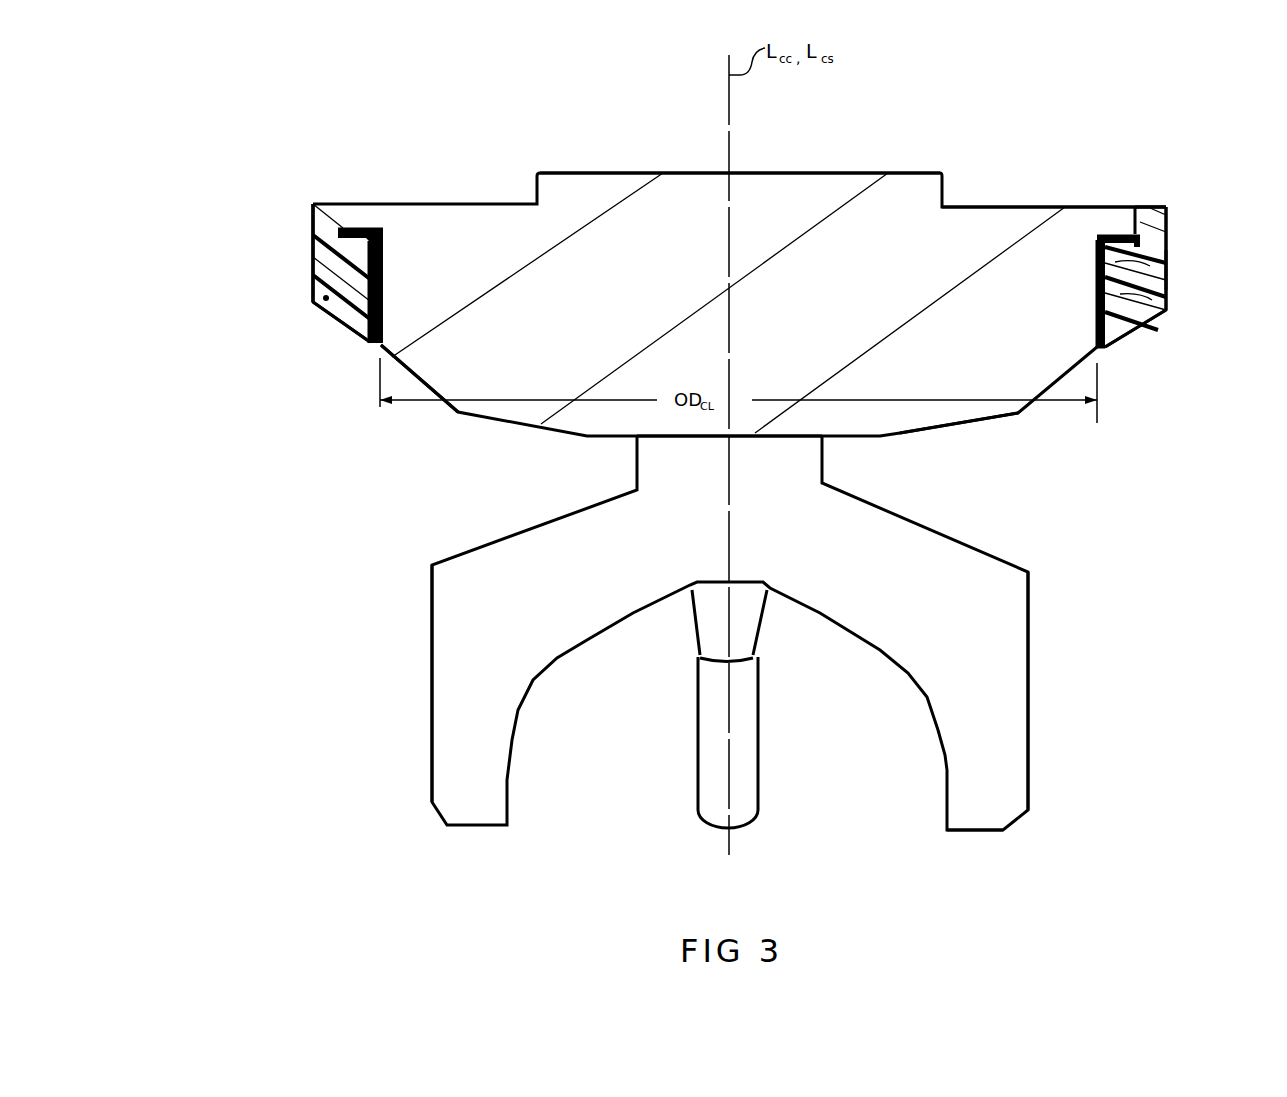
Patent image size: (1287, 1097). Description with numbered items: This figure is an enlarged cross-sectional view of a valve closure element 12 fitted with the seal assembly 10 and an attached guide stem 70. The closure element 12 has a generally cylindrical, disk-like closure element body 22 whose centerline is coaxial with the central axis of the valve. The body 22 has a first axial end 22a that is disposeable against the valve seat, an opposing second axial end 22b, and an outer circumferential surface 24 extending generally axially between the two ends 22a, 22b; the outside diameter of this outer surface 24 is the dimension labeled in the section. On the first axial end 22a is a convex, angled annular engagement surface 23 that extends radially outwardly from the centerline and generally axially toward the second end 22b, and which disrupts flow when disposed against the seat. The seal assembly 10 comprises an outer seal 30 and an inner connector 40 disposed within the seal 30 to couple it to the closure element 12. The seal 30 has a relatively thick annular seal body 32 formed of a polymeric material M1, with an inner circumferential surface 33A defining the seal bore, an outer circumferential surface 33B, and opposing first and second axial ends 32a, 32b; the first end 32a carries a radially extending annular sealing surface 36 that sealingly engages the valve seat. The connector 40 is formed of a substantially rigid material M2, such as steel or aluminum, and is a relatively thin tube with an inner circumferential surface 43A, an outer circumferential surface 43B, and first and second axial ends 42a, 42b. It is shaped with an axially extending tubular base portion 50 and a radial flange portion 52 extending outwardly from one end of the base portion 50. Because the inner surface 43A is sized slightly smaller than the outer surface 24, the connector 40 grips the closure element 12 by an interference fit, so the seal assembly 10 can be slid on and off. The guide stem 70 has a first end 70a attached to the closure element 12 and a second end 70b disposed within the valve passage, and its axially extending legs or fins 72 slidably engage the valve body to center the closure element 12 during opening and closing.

The seal assembly 10 is at (237, 283).
The closure element 12 is at (466, 138).
The closure element body 22 is at (986, 198).
The first axial end 22a is at (1000, 417).
The second axial end 22b is at (1035, 207).
The engagement surface 23 is at (443, 402).
The outer circumferential surface 24 is at (1167, 288).
The seal 30 is at (296, 226).
The seal body 32 is at (1172, 224).
The first axial end of seal body 32a is at (1147, 323).
The second axial end of seal body 32b is at (1152, 207).
The inner circumferential surface of seal body 33A is at (383, 324).
The outer circumferential surface of seal body 33B is at (313, 258).
The sealing surface 36 is at (340, 318).
The connector 40 is at (1083, 297).
The first axial end of connector body 42a is at (1106, 354).
The second axial end of connector body 42b is at (1110, 228).
The inner circumferential surface of connector body 43A is at (1096, 274).
The outer circumferential surface of connector body 43B is at (1168, 268).
The tubular base portion 50 is at (383, 295).
The radial flange portion 52 is at (352, 232).
The guide stem 70 is at (392, 671).
The first end of guide stem 70a is at (790, 435).
The second end of guide stem 70b is at (982, 838).
The legs or fins 72 is at (448, 726).
The polymeric material M1 is at (325, 298).
The substantially rigid material M2 is at (384, 262).